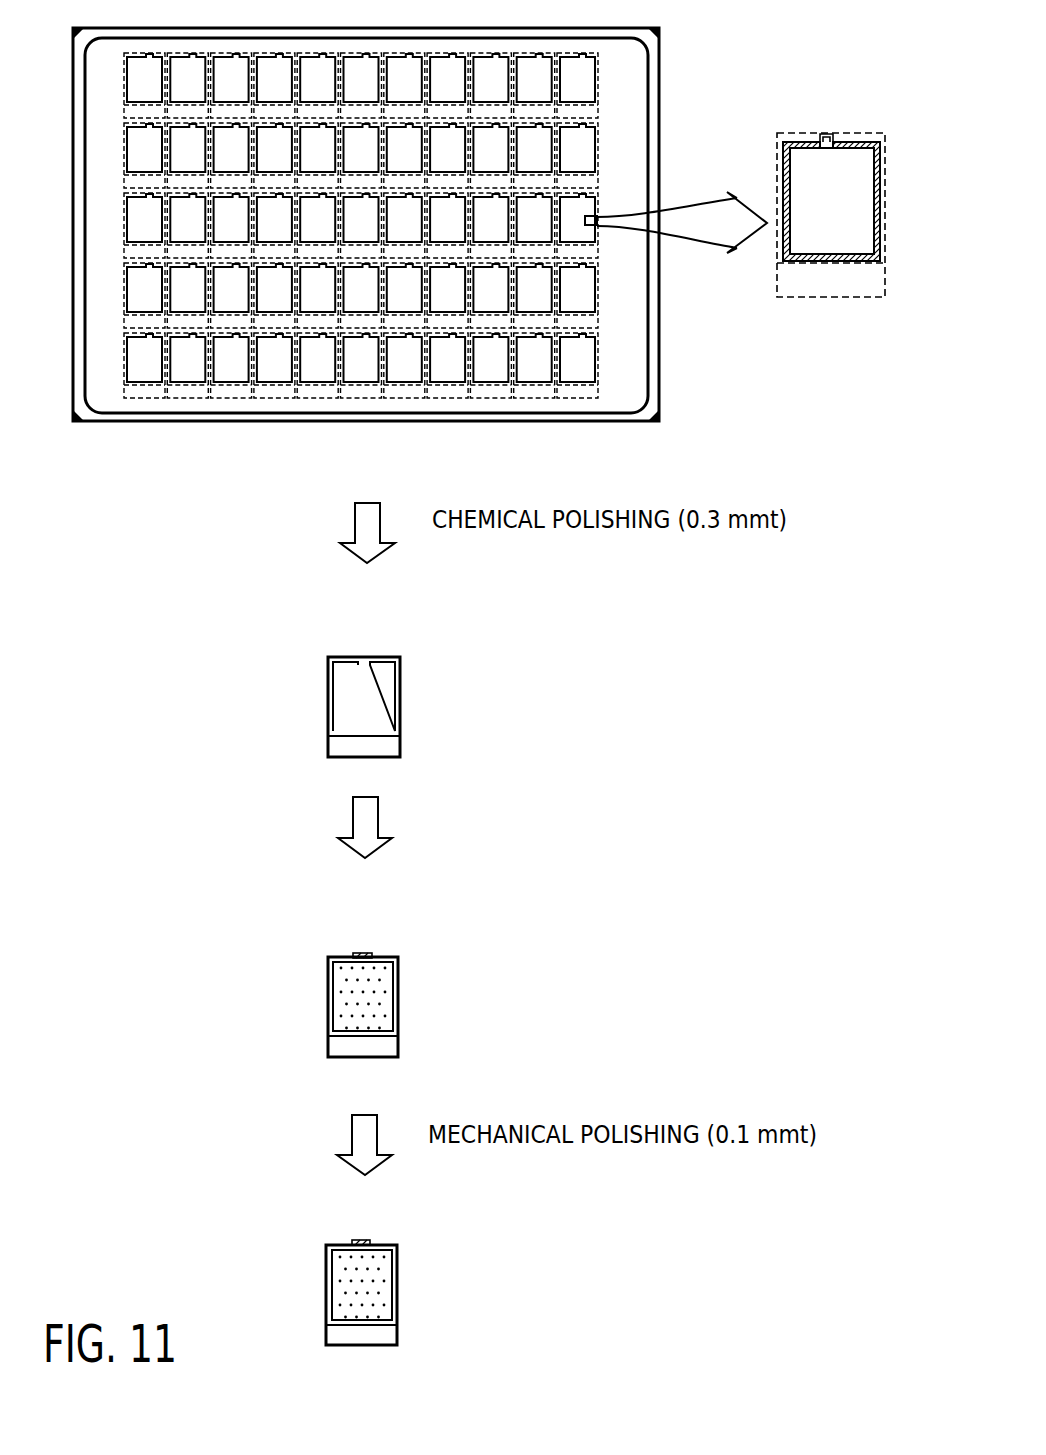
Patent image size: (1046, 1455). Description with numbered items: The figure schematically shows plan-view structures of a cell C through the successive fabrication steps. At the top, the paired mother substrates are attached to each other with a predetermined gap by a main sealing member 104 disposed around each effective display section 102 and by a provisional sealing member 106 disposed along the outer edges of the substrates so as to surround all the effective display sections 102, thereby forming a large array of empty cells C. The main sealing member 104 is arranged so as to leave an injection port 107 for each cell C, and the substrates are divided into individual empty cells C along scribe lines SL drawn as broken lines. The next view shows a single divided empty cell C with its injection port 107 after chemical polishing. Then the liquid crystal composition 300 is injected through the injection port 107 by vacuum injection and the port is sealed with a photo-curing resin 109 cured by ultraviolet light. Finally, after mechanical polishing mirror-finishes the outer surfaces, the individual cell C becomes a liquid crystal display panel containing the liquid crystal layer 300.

The effective display section 102 is at (800, 163).
The main sealing member 104 is at (793, 257).
The provisional sealing member 106 is at (653, 70).
The injection port 107 is at (837, 135).
The photo-curing resin 109 is at (363, 955).
The liquid crystal composition 300 is at (343, 1020).
The cell C is at (606, 159).
The scribe line SL is at (598, 393).